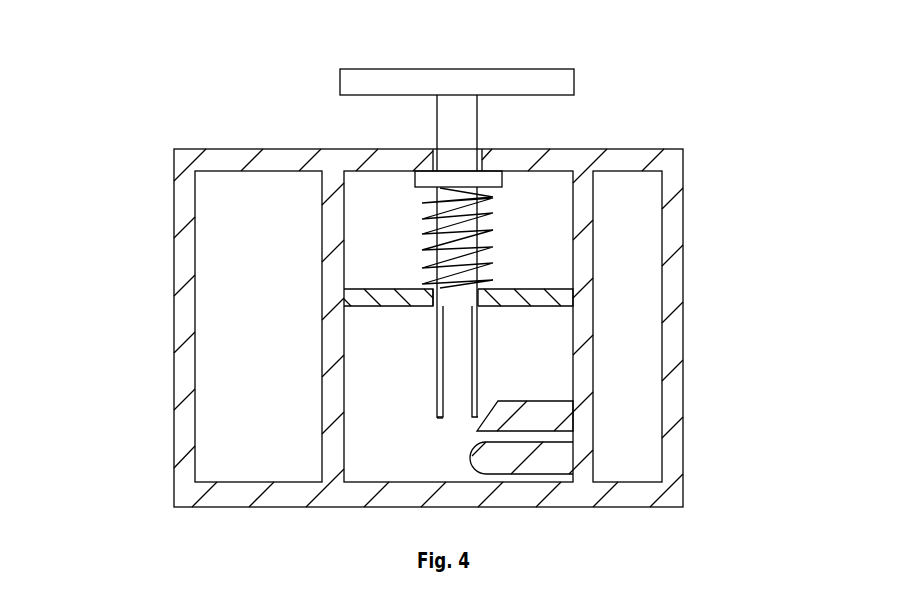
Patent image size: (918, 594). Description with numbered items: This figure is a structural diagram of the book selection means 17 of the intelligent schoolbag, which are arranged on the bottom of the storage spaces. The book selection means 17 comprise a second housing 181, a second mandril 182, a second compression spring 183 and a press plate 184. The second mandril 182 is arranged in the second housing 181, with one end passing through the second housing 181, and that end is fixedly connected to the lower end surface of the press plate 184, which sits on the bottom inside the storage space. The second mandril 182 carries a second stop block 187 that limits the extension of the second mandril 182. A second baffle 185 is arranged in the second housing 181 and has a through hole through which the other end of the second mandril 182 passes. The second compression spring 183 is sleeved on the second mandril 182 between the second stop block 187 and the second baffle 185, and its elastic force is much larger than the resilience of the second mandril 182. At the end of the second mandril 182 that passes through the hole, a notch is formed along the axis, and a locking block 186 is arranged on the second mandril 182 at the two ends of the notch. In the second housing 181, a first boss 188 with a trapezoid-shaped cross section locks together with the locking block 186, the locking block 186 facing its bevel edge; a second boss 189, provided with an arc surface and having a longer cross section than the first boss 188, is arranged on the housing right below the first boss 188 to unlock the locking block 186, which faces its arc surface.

The book selection means 17 is at (456, 255).
The second housing 181 is at (672, 287).
The second mandril 182 is at (455, 143).
The second compression spring 183 is at (493, 223).
The press plate 184 is at (482, 85).
The second baffle 185 is at (528, 290).
The locking block 186 is at (432, 409).
The second stop block 187 is at (487, 178).
The first boss 188 is at (535, 416).
The second boss 189 is at (646, 414).